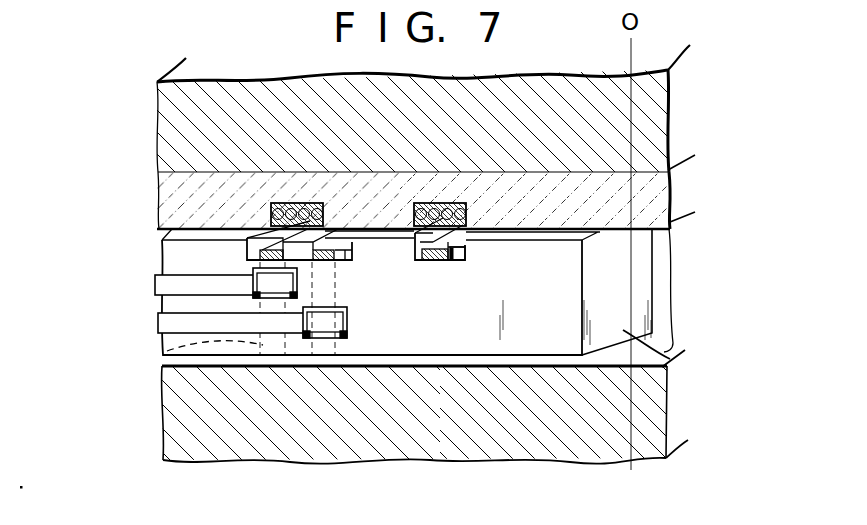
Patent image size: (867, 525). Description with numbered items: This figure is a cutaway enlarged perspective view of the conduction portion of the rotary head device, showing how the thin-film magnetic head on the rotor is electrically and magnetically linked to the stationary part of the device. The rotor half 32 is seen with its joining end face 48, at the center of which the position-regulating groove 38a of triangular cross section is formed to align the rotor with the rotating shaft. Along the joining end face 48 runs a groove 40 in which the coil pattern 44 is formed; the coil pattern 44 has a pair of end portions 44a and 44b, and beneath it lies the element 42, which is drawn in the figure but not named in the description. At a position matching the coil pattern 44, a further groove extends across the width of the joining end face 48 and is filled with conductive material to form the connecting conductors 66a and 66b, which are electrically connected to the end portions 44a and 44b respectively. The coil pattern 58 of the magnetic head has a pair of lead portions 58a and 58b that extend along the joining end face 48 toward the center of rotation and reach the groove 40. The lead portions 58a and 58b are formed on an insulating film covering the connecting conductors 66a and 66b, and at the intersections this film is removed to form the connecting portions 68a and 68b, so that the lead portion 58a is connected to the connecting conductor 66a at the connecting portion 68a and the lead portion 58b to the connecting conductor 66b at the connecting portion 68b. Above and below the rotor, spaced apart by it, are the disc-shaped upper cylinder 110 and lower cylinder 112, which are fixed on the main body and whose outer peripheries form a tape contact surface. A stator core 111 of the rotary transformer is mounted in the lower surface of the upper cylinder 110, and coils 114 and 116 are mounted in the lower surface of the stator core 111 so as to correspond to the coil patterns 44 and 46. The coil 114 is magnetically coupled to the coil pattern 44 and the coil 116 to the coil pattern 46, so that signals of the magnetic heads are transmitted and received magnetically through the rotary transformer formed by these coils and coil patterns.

The upper cylinder 110 is at (172, 124).
The stator core 111 is at (175, 179).
The lower cylinder 112 is at (276, 445).
The coil 114 is at (283, 202).
The coil 116 is at (438, 202).
The coil pattern 44 is at (330, 236).
The end portion of the coil pattern 44a is at (250, 258).
The end portion of the coil pattern 44b is at (352, 250).
The joining end face 48 is at (542, 236).
The groove 40 is at (245, 244).
The insulating pads 42 is at (428, 262).
The coil pattern 46 is at (466, 253).
The rotor half 32 is at (680, 280).
The position-regulating groove 38a is at (672, 362).
The coil pattern 58 is at (140, 298).
The lead portion 58a is at (162, 283).
The lead portion 58b is at (162, 327).
The connecting conductor 66a is at (167, 351).
The connecting conductor 66b is at (322, 279).
The connecting portion 68a is at (299, 286).
The connecting portion 68b is at (349, 326).